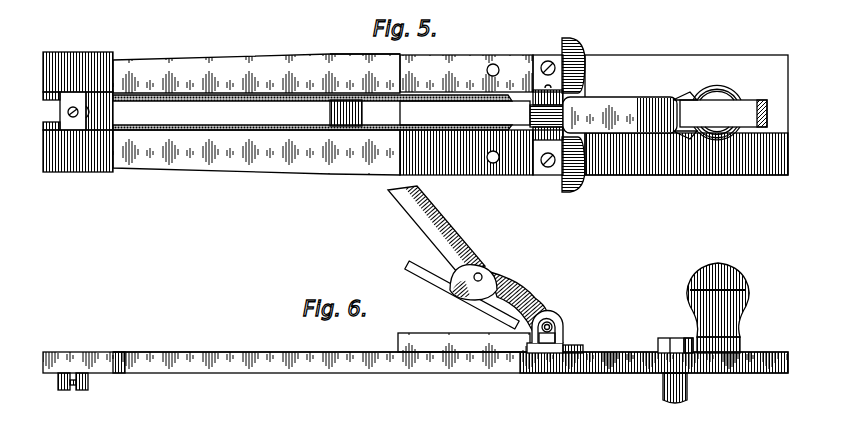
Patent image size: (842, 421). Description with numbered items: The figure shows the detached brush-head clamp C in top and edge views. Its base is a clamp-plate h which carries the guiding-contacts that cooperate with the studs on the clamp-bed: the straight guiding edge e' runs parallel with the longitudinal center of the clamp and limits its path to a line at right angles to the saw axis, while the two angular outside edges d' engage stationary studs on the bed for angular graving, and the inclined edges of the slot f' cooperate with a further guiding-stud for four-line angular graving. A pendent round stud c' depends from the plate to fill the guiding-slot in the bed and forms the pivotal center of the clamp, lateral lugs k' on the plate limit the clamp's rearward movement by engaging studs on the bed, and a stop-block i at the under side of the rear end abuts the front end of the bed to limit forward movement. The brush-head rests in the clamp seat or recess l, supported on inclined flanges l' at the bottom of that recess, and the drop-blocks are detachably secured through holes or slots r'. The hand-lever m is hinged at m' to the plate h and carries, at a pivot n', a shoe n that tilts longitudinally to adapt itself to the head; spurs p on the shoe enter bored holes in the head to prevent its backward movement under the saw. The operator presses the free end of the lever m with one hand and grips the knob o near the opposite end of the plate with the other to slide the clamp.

In FIG. 5, the clamp-plate h is at (415, 113).
In FIG. 6, the clamp-plate h is at (415, 353).
In FIG. 5, the angular outside edges d' is at (256, 114).
In FIG. 6, the angular outside edges d' is at (316, 360).
In FIG. 5, the straight guiding edge e' is at (365, 46).
In FIG. 5, the stop-block i is at (60, 108).
In FIG. 6, the stop-block i is at (77, 383).
In FIG. 5, the slot f' is at (312, 112).
In FIG. 5, the flange l' is at (391, 113).
In FIG. 5, the clamp seat or recess l is at (465, 113).
In FIG. 5, the holes or slots r' is at (488, 113).
In FIG. 5, the clamp C is at (568, 104).
In FIG. 6, the clamp C is at (559, 331).
In FIG. 5, the lateral lugs k' is at (579, 111).
In FIG. 6, the lateral lugs k' is at (573, 342).
In FIG. 5, the hinge m' is at (546, 115).
In FIG. 6, the hinge m' is at (526, 301).
In FIG. 5, the shoe n is at (620, 115).
In FIG. 6, the shoe n is at (462, 295).
In FIG. 5, the spurs p is at (584, 99).
In FIG. 6, the spurs p is at (418, 272).
In FIG. 5, the hand-lever m is at (720, 115).
In FIG. 6, the hand-lever m is at (436, 229).
In FIG. 5, the knob o is at (717, 106).
In FIG. 6, the knob o is at (718, 304).
In FIG. 6, the pivot n' is at (481, 278).
In FIG. 6, the pendent stud c' is at (681, 371).